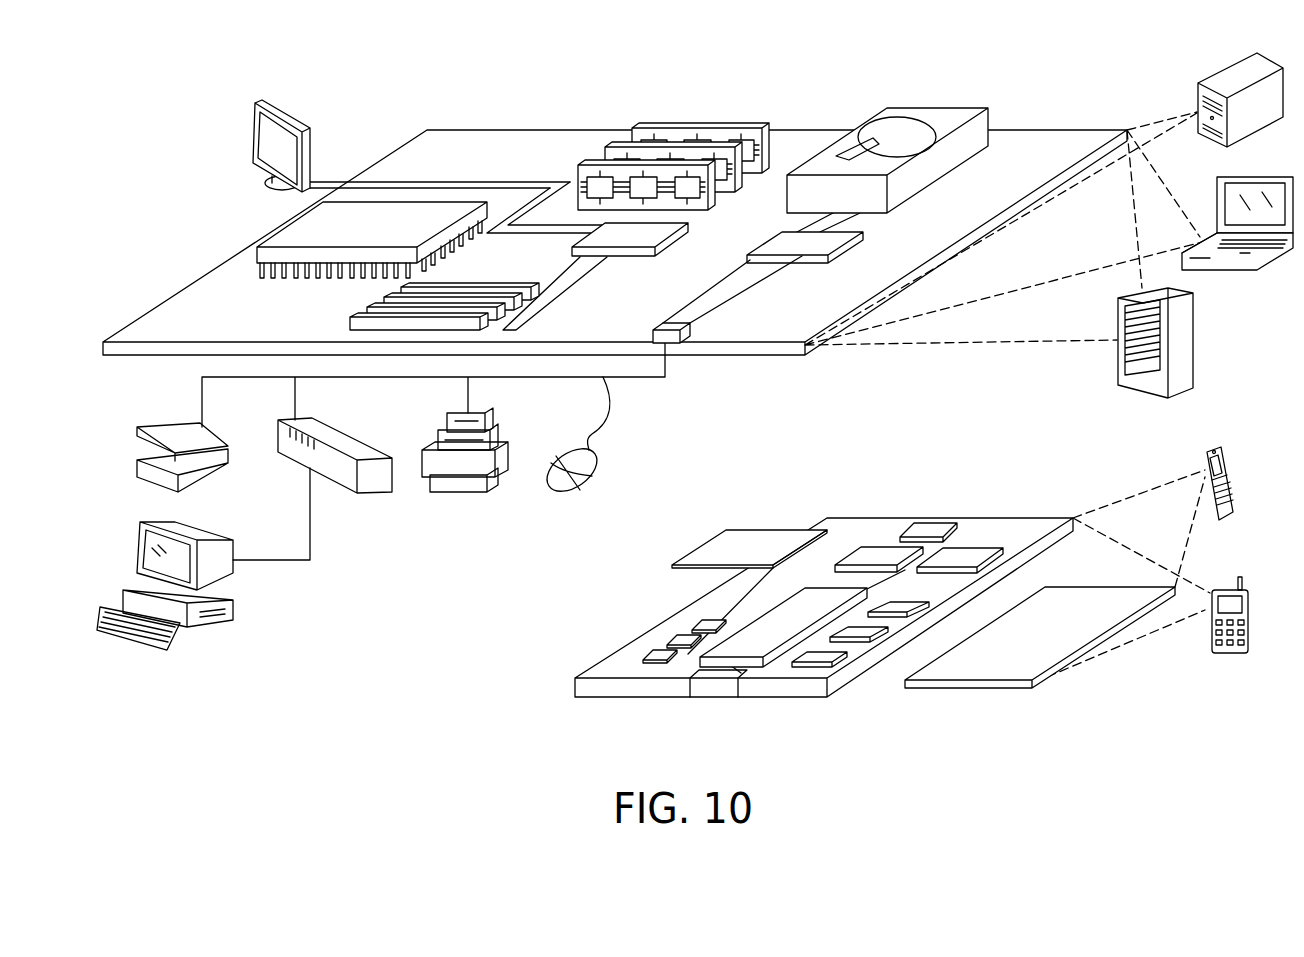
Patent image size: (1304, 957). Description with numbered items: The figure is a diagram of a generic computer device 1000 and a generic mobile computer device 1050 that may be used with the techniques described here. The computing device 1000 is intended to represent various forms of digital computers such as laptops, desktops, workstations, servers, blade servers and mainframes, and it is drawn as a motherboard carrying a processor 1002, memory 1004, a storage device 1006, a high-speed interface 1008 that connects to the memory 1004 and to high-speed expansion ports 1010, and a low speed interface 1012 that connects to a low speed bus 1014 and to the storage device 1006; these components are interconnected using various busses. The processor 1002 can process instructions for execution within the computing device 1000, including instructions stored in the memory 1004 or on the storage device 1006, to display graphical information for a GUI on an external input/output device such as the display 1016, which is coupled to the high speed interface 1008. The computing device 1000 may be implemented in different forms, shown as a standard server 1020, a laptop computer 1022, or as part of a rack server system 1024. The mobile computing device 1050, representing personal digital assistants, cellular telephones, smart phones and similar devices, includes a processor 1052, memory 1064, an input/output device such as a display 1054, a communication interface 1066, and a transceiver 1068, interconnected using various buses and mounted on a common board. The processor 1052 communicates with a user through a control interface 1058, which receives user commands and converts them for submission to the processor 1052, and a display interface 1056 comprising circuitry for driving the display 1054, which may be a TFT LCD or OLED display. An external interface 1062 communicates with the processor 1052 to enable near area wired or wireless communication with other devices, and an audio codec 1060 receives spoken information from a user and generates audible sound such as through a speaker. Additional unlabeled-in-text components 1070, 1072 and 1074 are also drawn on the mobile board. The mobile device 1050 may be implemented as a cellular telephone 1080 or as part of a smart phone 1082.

The generic computer device 1000 is at (377, 78).
The processor 1002 is at (277, 226).
The memory 1004 is at (708, 124).
The storage device 1006 is at (930, 108).
The high-speed interface 1008 is at (643, 235).
The high-speed expansion ports 1010 is at (378, 305).
The low speed interface 1012 is at (783, 238).
The low speed bus 1014 is at (672, 326).
The display 1016 is at (258, 103).
The standard server 1020 is at (1217, 80).
The laptop computer 1022 is at (1268, 176).
The rack server system 1024 is at (1195, 336).
The generic mobile computer device 1050 is at (528, 705).
The processor 1052 is at (752, 632).
The display 1054 is at (1076, 600).
The display interface 1056 is at (830, 657).
The control interface 1058 is at (870, 633).
The audio codec 1060 is at (905, 603).
The external interface 1062 is at (716, 682).
The memory 1064 is at (667, 640).
The communication interface 1066 is at (878, 548).
The transceiver 1068 is at (965, 548).
The chip 1070 is at (925, 528).
The trace 1072 is at (805, 530).
The battery 1074 is at (726, 530).
The cellular telephone 1080 is at (1215, 447).
The smart phone 1082 is at (1223, 588).